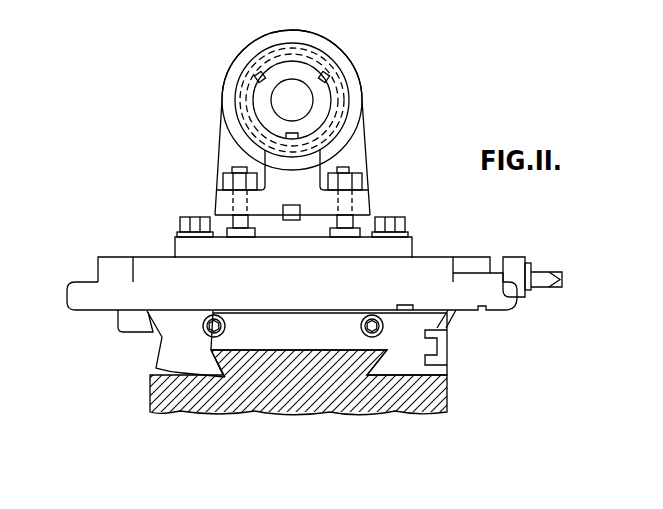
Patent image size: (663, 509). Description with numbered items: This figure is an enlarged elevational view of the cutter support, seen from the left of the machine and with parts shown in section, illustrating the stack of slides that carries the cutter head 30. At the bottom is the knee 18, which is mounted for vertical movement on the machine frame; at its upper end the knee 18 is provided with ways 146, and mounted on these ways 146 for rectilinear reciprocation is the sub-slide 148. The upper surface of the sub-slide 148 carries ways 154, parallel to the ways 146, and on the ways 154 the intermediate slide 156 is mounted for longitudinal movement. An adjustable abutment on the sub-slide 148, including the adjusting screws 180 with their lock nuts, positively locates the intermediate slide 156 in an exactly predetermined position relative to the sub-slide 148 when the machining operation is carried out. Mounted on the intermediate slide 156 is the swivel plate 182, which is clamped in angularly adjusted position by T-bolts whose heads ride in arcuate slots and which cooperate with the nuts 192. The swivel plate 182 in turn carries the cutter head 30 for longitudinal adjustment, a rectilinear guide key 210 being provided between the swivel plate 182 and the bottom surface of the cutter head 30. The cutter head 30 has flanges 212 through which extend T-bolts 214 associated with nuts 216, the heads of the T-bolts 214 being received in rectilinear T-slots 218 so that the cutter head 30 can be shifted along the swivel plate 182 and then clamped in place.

The knee 18 is at (447, 393).
The cutter head 30 is at (362, 100).
The ways 146 is at (210, 356).
The sub-slide 148 is at (153, 357).
The ways 154 is at (147, 323).
The intermediate slide 156 is at (66, 300).
The adjusting screws 180 is at (329, 342).
The swivel plate 182 is at (411, 246).
The nuts 192 is at (408, 220).
The rectilinear guide key 210 is at (298, 199).
The flanges 212 is at (369, 204).
The T-bolts 214 is at (345, 168).
The nuts 216 is at (364, 181).
The rectilinear T-slots 218 is at (332, 229).